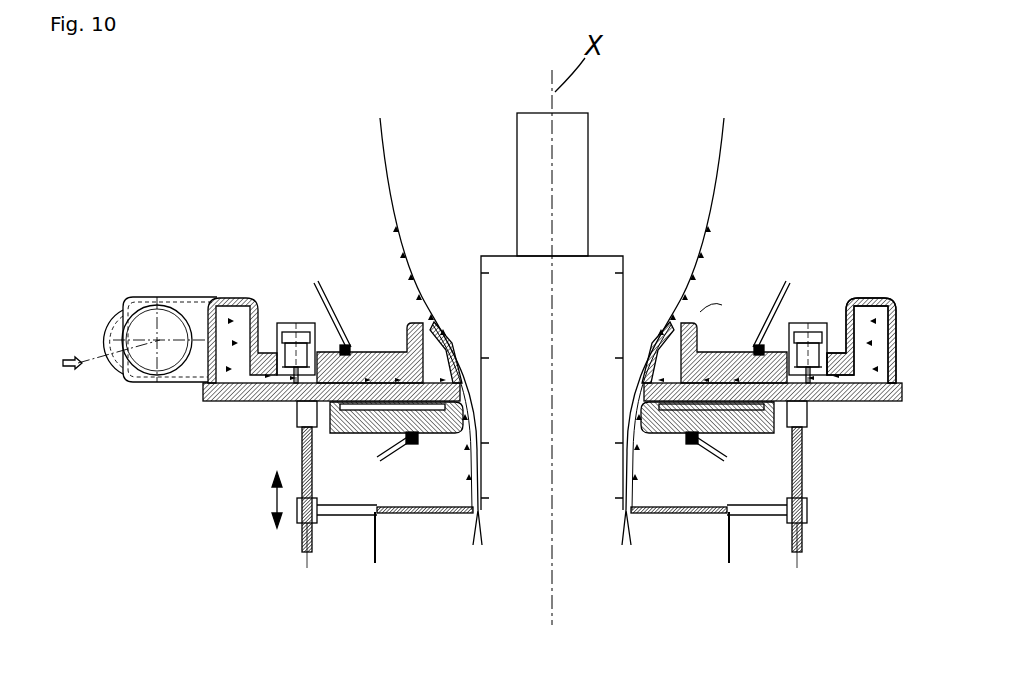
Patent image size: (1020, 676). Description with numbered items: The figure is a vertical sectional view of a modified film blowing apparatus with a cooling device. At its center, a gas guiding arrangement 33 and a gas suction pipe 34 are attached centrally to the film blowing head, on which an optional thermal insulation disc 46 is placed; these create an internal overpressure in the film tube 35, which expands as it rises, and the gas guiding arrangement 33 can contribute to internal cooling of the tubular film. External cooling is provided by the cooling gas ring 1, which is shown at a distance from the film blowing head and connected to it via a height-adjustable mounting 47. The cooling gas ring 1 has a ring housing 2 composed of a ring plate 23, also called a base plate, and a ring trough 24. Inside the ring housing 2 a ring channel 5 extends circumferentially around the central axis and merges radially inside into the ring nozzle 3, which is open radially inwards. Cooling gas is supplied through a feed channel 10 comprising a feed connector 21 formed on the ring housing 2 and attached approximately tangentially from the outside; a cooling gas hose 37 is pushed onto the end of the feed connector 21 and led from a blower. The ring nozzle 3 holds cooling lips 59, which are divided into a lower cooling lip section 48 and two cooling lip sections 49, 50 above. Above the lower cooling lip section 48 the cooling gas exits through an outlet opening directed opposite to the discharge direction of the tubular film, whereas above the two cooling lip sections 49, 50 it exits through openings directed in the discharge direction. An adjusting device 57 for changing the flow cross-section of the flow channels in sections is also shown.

The cooling gas ring 1 is at (122, 341).
The ring housing 2 is at (228, 401).
The ring nozzle 3 is at (381, 354).
The ring channel 5 is at (228, 316).
The feed channel 10 is at (123, 304).
The feed connector 21 is at (168, 297).
The ring plate 23 is at (860, 402).
The ring trough 24 is at (858, 297).
The gas guiding arrangement 33 is at (623, 292).
The gas suction pipe 34 is at (589, 172).
The film tube 35 is at (727, 142).
The cooling gas hose 37 is at (101, 333).
The thermal insulation disc 46 is at (405, 517).
The height-adjustable mounting 47 is at (297, 522).
The lower cooling lip section 48 is at (680, 405).
The cooling lip section 49 is at (705, 380).
The cooling lip section 50 is at (723, 388).
The adjusting device 57 is at (294, 330).
The cooling lips 59 is at (707, 312).